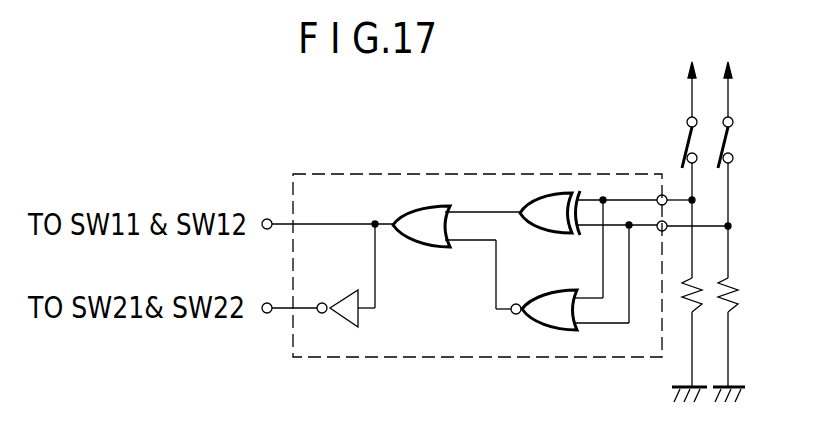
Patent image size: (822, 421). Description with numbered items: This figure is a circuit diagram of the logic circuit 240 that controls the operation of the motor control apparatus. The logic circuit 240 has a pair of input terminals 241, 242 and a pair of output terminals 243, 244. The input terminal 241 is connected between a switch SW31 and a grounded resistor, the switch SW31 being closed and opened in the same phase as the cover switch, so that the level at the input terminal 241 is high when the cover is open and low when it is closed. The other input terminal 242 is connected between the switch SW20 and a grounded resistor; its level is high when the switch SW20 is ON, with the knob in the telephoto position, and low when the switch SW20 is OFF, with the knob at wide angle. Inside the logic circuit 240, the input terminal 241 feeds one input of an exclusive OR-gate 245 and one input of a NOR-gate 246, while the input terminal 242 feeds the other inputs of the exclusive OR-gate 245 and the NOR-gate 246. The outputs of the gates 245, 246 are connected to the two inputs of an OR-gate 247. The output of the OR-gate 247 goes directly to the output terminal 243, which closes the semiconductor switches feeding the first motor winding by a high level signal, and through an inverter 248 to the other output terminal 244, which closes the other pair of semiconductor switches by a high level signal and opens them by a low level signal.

The logic circuit 240 is at (404, 358).
The input terminal 241 is at (658, 196).
The input terminal 242 is at (668, 222).
The output terminal 243 is at (267, 218).
The output terminal 244 is at (267, 313).
The exclusive OR-gate 245 is at (545, 194).
The NOR-gate 246 is at (552, 292).
The OR-gate 247 is at (425, 206).
The inverter 248 is at (345, 292).
The switch SW31 is at (688, 136).
The switch SW20 is at (732, 136).